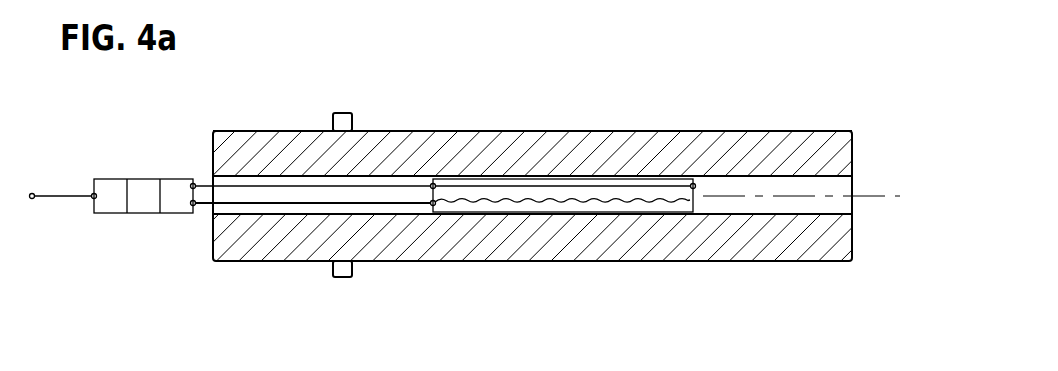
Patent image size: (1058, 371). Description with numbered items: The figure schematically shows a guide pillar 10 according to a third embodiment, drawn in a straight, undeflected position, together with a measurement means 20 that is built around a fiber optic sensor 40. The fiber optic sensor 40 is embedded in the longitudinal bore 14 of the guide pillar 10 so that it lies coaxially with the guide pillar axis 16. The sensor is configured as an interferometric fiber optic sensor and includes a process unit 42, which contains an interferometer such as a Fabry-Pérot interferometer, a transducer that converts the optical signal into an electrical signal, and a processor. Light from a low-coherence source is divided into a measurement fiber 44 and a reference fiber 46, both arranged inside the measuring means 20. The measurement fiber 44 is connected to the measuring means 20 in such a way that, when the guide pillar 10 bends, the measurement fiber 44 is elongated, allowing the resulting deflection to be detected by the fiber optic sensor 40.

The guide pillar 10 is at (800, 131).
The longitudinal bore 14 is at (830, 186).
The guide pillar axis 16 is at (858, 197).
The measurement means 20 is at (700, 118).
The fiber optic sensor 40 is at (427, 174).
The process unit 42 is at (507, 175).
The measurement fiber 44 is at (613, 188).
The reference fiber 46 is at (575, 202).